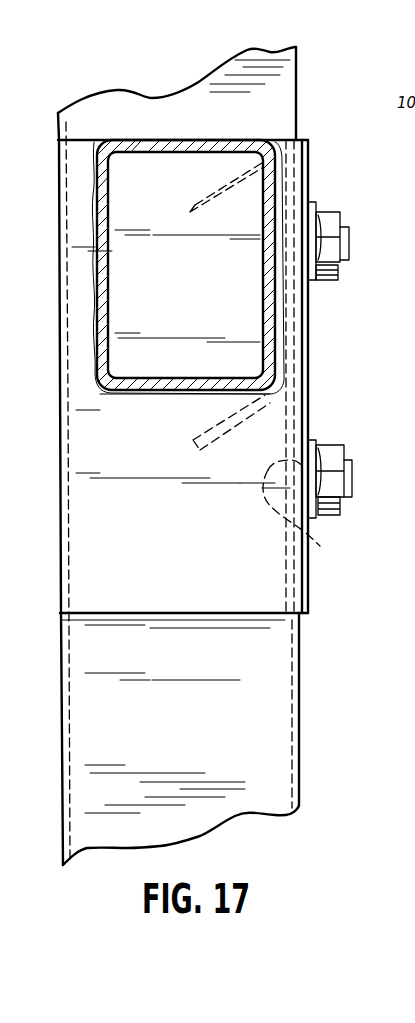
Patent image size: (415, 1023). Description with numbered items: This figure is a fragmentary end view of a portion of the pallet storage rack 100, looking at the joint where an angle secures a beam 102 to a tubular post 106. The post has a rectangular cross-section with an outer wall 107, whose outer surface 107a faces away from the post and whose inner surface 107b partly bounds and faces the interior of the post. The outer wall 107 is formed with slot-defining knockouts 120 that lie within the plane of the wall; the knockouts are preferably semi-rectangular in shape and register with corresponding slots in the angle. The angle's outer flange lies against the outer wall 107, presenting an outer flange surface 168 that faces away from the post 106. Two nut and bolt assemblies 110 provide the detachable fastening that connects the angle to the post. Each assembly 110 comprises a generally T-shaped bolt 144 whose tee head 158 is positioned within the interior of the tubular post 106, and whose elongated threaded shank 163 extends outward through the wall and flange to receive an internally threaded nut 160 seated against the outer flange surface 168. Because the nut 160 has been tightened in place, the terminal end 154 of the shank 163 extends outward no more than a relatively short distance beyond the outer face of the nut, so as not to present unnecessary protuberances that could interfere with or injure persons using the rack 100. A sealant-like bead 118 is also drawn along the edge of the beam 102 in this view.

The pallet storage rack 100 is at (186, 60).
The beam 102 is at (276, 333).
The tubular post 106 is at (296, 72).
The outer wall 107 is at (304, 741).
The outer surface 107a is at (297, 666).
The inner surface 107b is at (288, 560).
The nut and bolt assembly 110 is at (348, 505).
The sealant bead 118 is at (180, 395).
The knockout 120 is at (196, 450).
The T-bolt 144 is at (351, 230).
The terminal end 154 is at (352, 480).
The tee head 158 is at (313, 523).
The nut 160 is at (330, 445).
The threaded shank 163 is at (342, 275).
The outer flange surface 168 is at (308, 390).